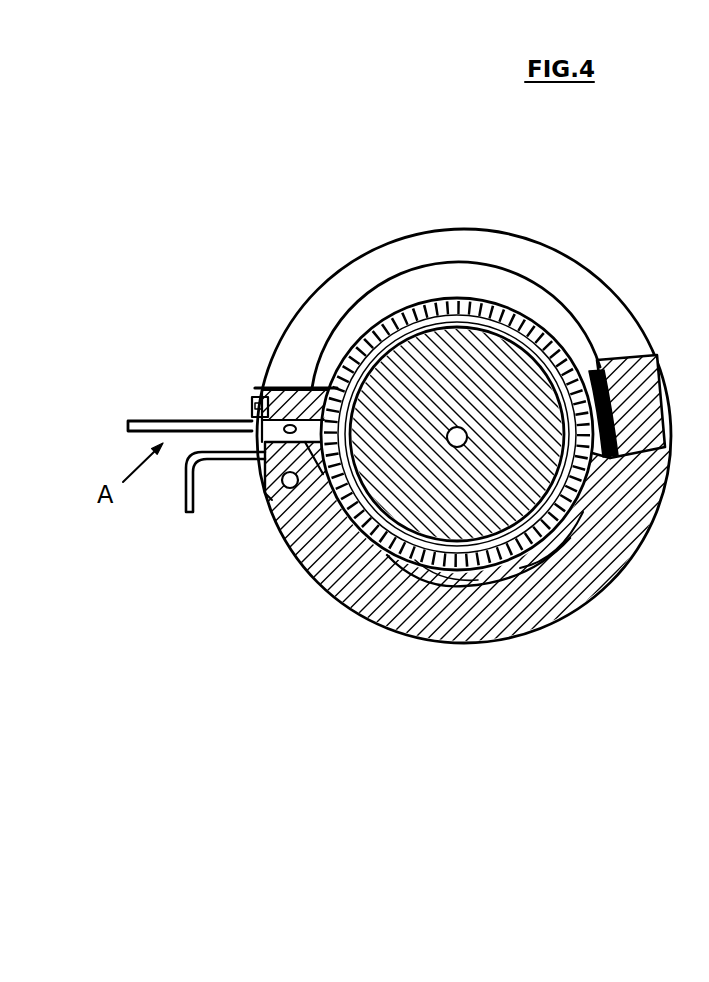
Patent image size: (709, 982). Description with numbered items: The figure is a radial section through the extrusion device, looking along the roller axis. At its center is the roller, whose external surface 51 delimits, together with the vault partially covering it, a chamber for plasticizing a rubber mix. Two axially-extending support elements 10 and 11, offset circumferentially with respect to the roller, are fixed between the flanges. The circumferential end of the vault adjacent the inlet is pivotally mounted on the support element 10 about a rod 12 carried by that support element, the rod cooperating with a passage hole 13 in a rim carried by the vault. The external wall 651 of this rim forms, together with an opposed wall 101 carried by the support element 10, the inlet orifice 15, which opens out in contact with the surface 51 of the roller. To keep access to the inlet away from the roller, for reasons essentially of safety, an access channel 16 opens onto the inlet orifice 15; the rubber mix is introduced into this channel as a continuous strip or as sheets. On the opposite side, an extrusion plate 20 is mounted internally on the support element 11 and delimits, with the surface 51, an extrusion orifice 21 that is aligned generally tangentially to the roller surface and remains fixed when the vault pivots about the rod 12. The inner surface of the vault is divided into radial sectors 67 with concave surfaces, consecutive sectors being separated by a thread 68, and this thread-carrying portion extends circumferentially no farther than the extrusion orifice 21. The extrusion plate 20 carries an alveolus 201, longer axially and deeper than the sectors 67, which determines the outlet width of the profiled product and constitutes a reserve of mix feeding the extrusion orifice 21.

The support element 10 is at (293, 389).
The opposed wall 101 is at (298, 428).
The support element 11 is at (659, 368).
The rod 12 is at (276, 488).
The passage hole 13 is at (289, 489).
The inlet orifice 15 is at (255, 418).
The access channel 16 is at (183, 432).
The extrusion plate 20 is at (601, 372).
The extrusion orifice 21 is at (592, 372).
The alveolus 201 is at (611, 456).
The external surface 51 is at (398, 632).
The radial sector 67 is at (503, 578).
The thread 68 is at (537, 556).
The external wall 651 is at (280, 455).